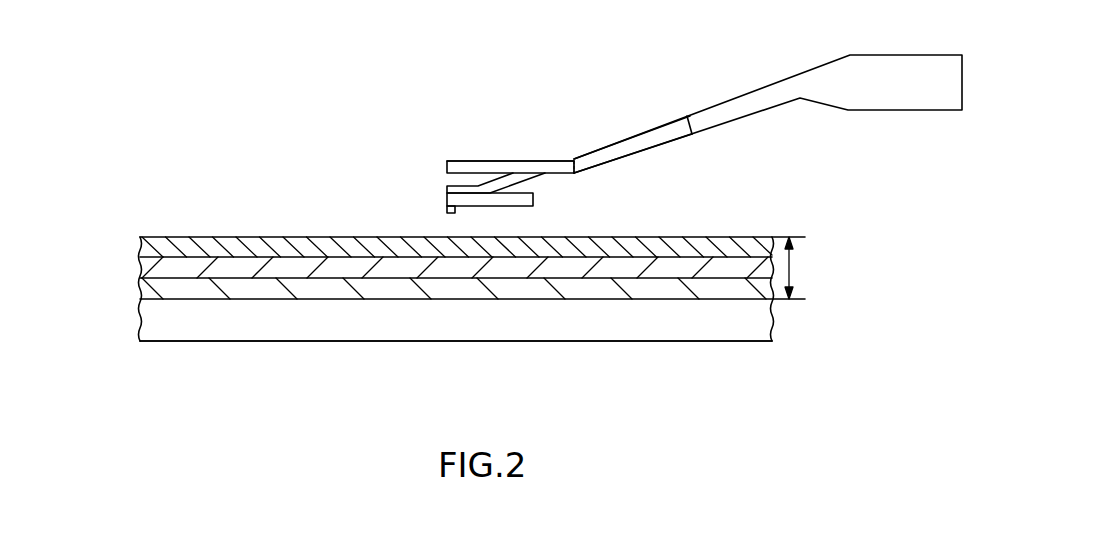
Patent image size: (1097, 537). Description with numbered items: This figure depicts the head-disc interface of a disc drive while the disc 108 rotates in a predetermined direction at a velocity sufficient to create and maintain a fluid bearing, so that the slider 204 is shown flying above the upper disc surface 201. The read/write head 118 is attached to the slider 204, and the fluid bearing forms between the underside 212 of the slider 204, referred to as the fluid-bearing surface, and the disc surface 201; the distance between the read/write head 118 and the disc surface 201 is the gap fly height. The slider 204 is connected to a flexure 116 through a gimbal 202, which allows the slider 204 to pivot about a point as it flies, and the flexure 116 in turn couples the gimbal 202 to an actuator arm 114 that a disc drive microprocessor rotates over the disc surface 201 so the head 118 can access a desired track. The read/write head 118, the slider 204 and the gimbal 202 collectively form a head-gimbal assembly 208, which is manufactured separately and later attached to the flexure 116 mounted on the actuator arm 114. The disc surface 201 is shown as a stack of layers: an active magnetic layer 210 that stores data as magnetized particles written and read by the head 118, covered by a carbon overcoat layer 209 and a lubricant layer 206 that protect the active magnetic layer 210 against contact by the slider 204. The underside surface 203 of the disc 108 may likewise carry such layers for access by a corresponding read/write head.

The disc 108 is at (138, 338).
The actuator arm 114 is at (773, 80).
The flexure 116 is at (628, 137).
The read/write head 118 is at (447, 210).
The disc surface 201 is at (810, 262).
The gimbal 202 is at (505, 160).
The underside surface of the disc 203 is at (205, 342).
The slider 204 is at (447, 190).
The lubricant layer 206 is at (138, 240).
The head-gimbal assembly 208 is at (443, 153).
The carbon overcoat layer 209 is at (138, 268).
The active magnetic layer 210 is at (138, 296).
The underside of the slider 212 is at (502, 207).